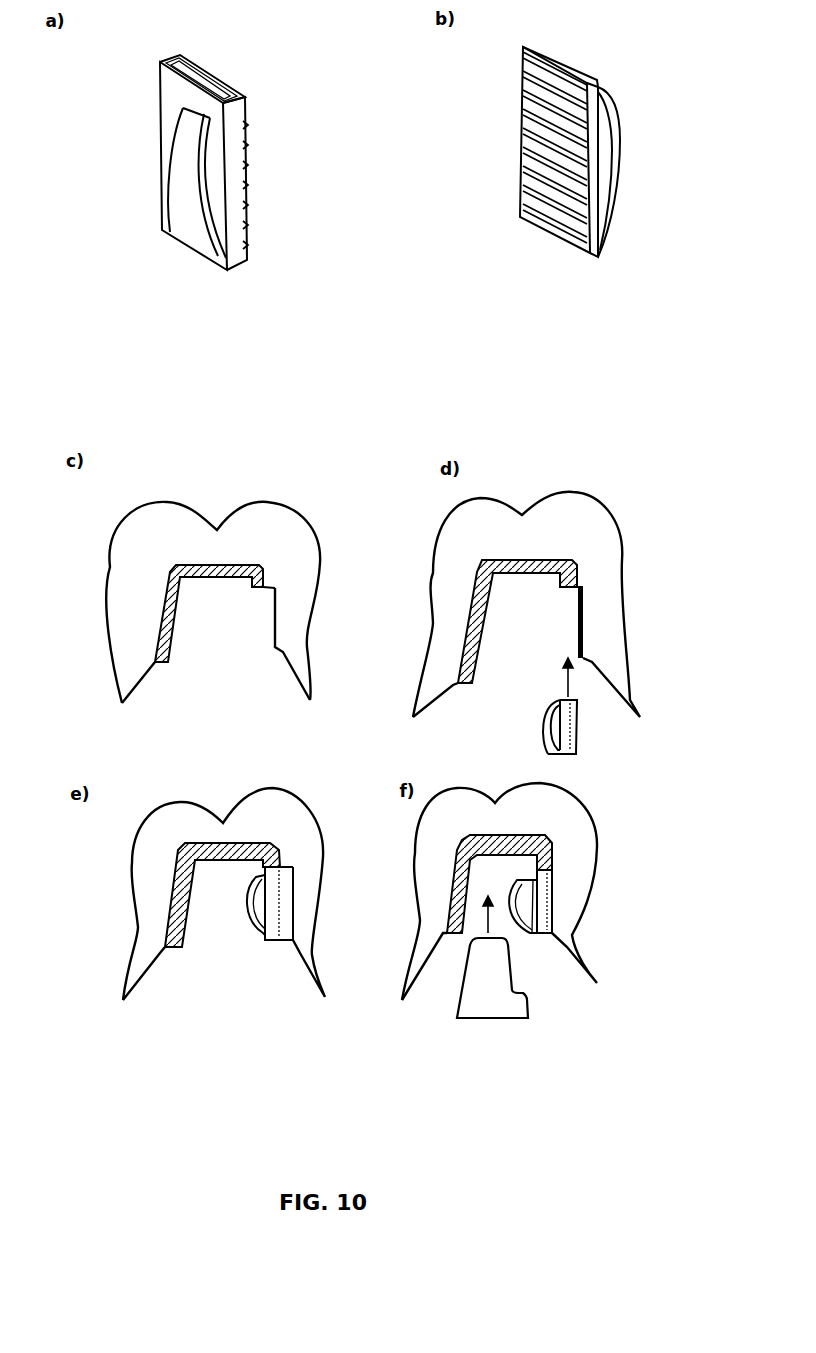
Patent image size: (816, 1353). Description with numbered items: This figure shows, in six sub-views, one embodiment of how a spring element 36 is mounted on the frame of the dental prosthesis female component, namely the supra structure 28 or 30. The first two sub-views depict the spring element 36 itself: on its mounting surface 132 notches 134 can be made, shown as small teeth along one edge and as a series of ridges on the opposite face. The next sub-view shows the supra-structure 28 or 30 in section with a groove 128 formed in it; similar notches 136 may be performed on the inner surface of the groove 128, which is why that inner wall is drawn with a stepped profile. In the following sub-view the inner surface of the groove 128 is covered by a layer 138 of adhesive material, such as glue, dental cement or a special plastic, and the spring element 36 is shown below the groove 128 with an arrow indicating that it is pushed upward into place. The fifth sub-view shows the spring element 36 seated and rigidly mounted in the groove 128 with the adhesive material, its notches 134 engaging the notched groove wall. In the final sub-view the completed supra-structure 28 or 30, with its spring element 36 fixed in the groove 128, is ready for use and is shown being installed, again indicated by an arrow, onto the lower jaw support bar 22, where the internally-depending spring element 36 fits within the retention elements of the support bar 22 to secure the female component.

The mounting surface 132 is at (237, 100).
The notches 134 is at (243, 173).
The spring element 36 is at (178, 217).
The supra structure 28 is at (405, 728).
The supra structure 30 is at (667, 807).
The groove 128 is at (270, 590).
The notches 136 is at (275, 632).
The layer of adhesive material 138 is at (578, 620).
The support bar 22 is at (512, 1008).